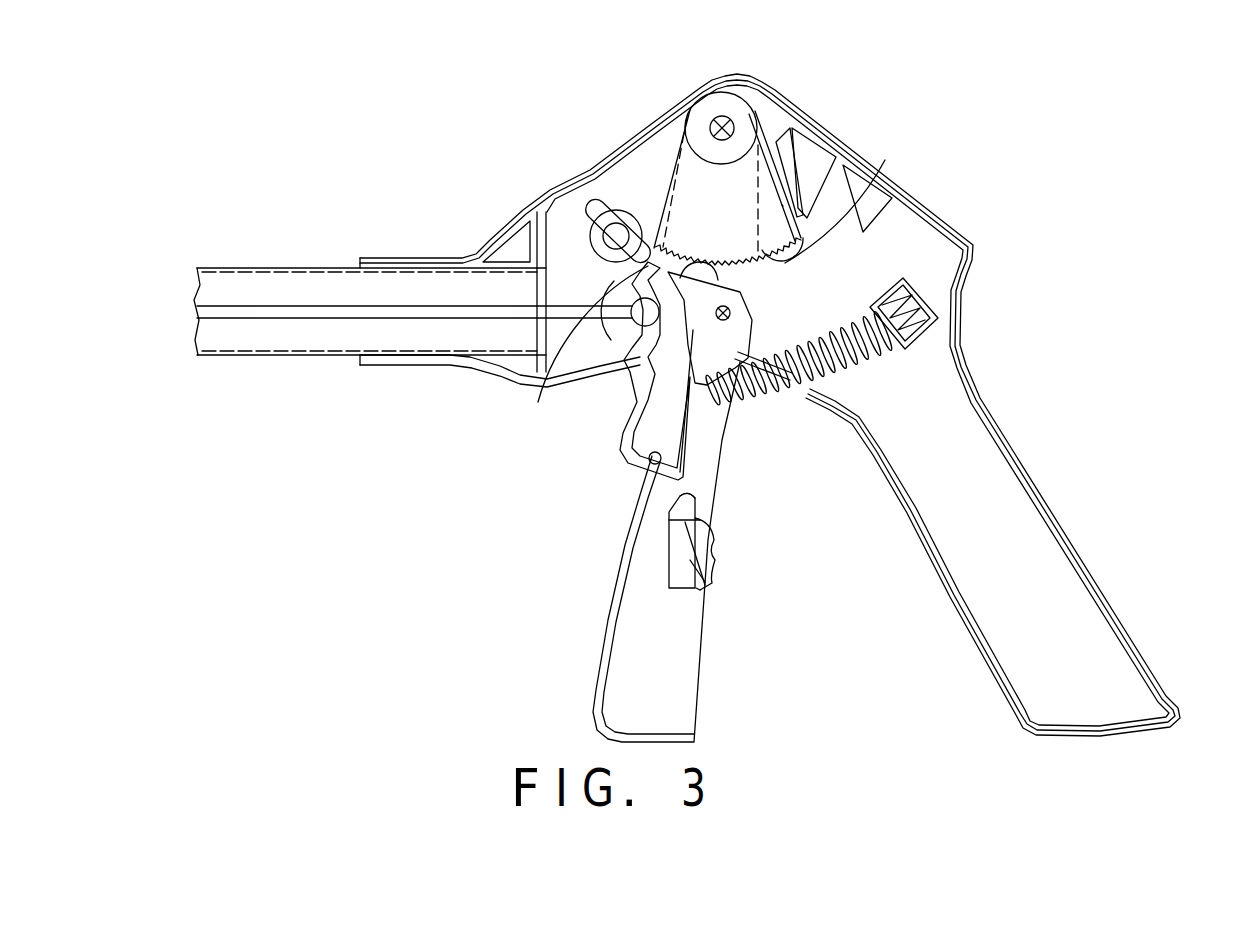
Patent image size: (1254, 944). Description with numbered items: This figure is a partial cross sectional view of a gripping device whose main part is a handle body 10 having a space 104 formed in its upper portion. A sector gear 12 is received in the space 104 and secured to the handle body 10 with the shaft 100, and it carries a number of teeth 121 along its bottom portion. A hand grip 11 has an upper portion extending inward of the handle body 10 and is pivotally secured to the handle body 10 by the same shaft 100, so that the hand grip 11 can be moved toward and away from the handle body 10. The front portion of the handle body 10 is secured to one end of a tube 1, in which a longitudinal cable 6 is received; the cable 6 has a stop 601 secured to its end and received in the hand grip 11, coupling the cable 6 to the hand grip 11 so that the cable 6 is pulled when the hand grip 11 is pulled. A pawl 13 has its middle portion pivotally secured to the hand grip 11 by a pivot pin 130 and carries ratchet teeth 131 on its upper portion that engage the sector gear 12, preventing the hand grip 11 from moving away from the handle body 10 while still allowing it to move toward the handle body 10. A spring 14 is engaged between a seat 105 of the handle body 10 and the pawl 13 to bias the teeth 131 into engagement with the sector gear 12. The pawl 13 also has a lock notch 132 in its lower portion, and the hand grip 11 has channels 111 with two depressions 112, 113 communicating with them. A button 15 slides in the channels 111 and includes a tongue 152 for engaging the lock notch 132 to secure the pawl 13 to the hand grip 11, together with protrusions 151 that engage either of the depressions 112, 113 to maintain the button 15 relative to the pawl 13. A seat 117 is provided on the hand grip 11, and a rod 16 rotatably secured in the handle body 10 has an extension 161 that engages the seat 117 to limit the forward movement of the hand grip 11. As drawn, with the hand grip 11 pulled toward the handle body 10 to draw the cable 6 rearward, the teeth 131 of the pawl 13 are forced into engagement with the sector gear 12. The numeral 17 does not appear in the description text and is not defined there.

The tube 1 is at (281, 268).
The longitudinal cable 6 is at (408, 306).
The handle body 10 is at (975, 254).
The hand grip 11 is at (598, 735).
The sector gear 12 is at (782, 205).
The pawl 13 is at (640, 434).
The spring 14 is at (780, 402).
The button 15 is at (712, 565).
The rod 16 is at (595, 200).
The pawl pin 17 is at (598, 208).
The shaft 100 is at (716, 118).
The space 104 is at (765, 150).
The seat 105 is at (935, 318).
The channels 111 is at (675, 566).
The depression 112 is at (705, 582).
The depression 113 is at (708, 525).
The seat 117 is at (540, 402).
The teeth 121 is at (878, 172).
The pivot pin 130 is at (730, 316).
The ratchet teeth 131 is at (702, 268).
The lock notch 132 is at (650, 462).
The protrusions 151 is at (703, 600).
The tongue 152 is at (700, 492).
The extension 161 is at (618, 212).
The stop 601 is at (628, 345).